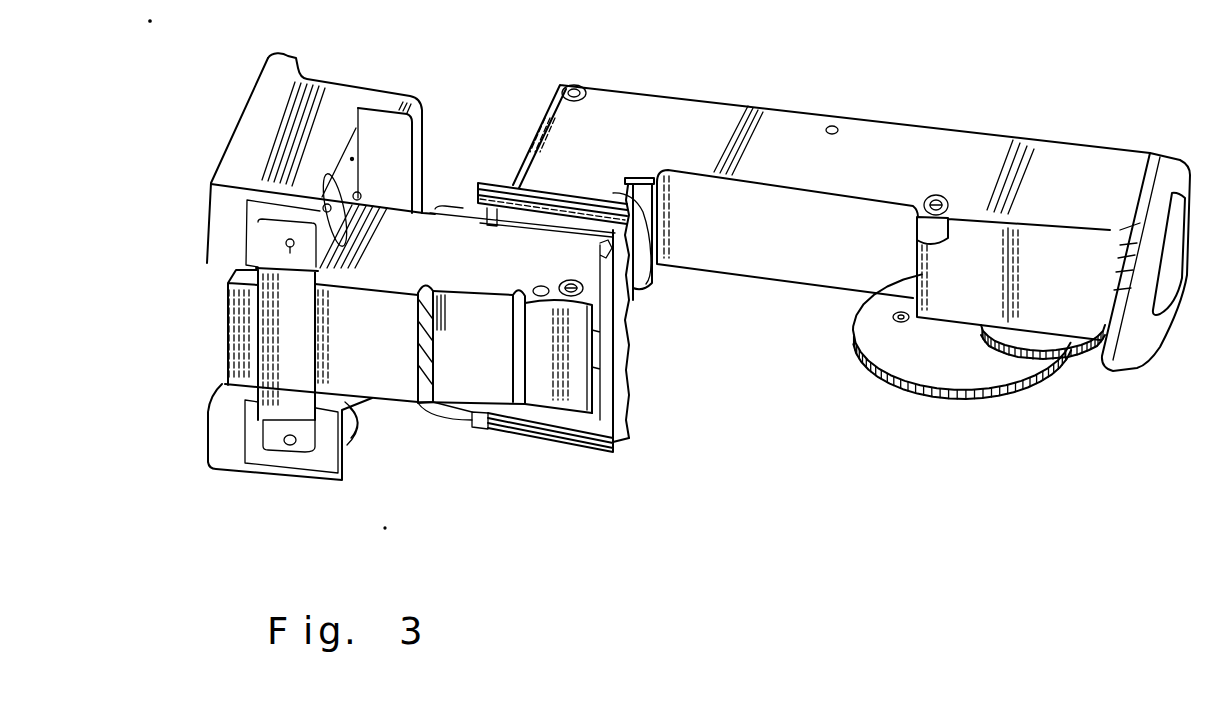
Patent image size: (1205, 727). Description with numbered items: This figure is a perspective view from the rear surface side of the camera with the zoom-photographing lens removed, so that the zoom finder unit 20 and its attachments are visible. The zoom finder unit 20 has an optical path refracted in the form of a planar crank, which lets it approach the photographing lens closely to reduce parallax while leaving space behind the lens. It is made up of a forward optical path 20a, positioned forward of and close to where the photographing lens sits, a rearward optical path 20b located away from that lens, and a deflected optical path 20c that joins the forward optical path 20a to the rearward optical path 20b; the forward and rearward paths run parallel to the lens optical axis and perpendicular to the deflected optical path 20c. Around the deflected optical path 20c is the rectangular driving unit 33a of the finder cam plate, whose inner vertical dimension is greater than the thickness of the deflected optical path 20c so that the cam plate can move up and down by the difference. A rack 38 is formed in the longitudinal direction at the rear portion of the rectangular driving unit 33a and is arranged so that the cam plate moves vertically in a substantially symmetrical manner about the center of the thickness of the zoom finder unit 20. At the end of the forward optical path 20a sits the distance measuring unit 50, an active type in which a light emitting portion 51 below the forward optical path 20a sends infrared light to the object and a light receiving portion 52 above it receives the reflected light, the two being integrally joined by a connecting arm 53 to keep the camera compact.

The distance measuring unit 50 is at (345, 75).
The light emitting portion 51 is at (227, 440).
The light receiving portion 52 is at (243, 140).
The connecting arm 53 is at (405, 172).
The zoom finder unit 20 is at (392, 380).
The forward optical path 20a is at (462, 272).
The rearward optical path 20b is at (920, 143).
The deflected optical path 20c is at (653, 260).
The rack 38 is at (631, 392).
The rectangular driving unit 33a is at (563, 430).